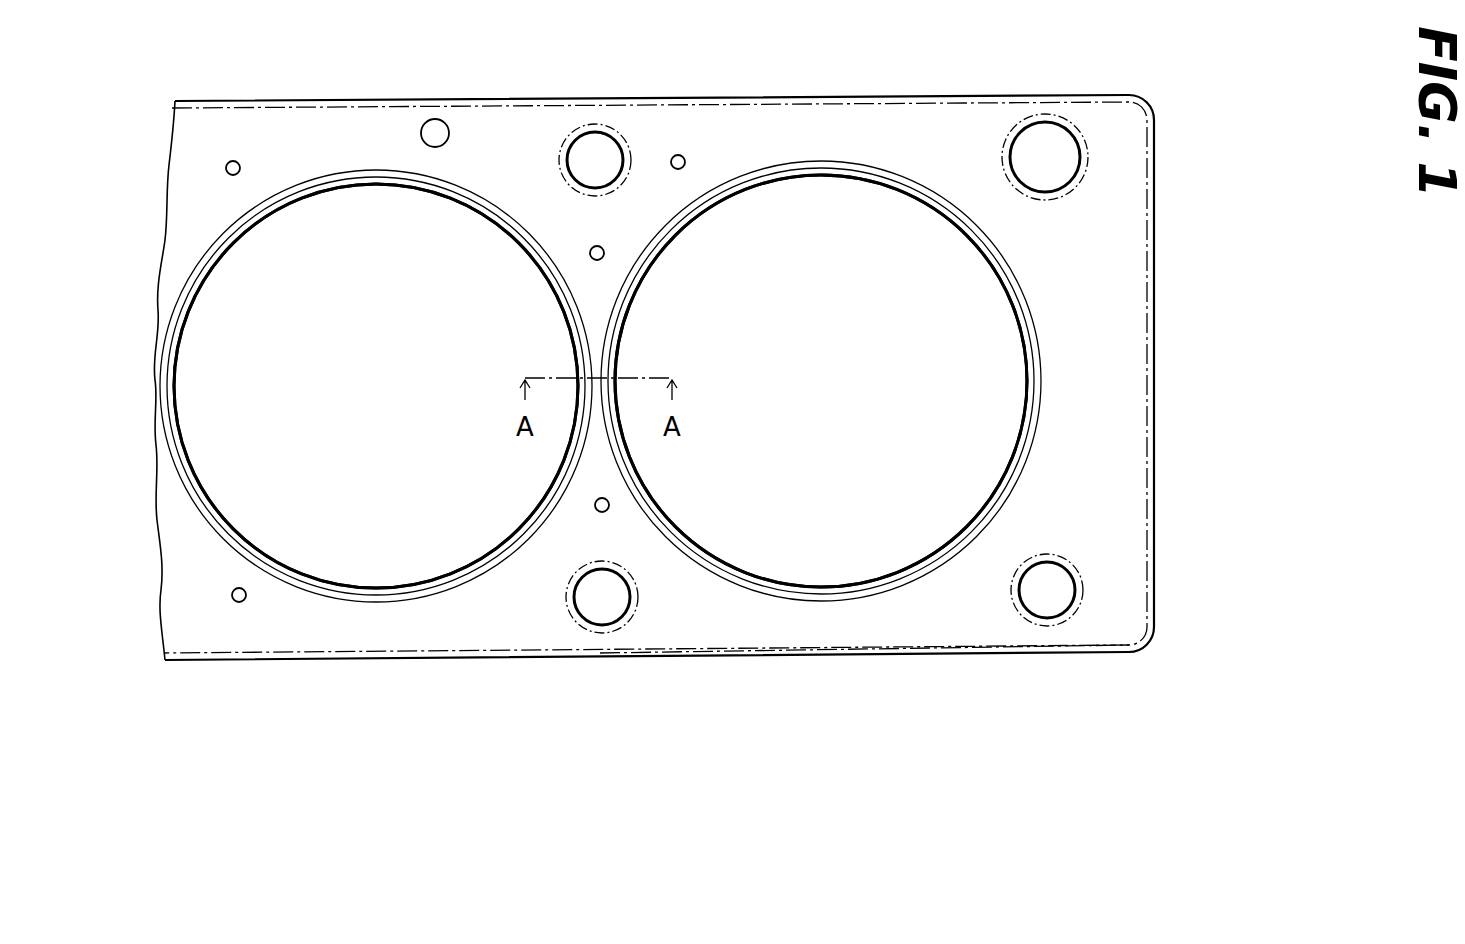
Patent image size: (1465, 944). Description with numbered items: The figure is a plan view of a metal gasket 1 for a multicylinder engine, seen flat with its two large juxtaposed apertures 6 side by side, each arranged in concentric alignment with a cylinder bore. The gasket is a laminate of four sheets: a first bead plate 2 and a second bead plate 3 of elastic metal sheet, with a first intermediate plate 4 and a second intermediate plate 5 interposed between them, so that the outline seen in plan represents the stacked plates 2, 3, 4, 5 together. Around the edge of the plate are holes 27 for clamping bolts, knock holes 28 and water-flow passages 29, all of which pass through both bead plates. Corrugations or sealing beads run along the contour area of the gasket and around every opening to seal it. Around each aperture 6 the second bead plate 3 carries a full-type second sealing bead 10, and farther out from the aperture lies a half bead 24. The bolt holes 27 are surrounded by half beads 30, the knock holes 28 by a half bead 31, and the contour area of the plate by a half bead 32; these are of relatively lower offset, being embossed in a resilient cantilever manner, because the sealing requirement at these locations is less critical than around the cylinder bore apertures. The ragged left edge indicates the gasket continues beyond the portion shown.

The metal gasket 1 is at (896, 92).
The first bead plate 2 is at (724, 377).
The second bead plate 3 is at (724, 377).
The first intermediate plate 4 is at (724, 377).
The second intermediate plate 5 is at (1108, 505).
The juxtaposed apertures 6 is at (359, 371).
The second sealing bead 10 is at (537, 246).
The half bead 24 is at (469, 188).
The holes for clamping bolts 27 is at (602, 142).
The knock holes 28 is at (1032, 140).
The water-flow passages 29 is at (234, 160).
The half bead 30 is at (576, 127).
The half bead 31 is at (1076, 114).
The half bead 32 is at (880, 648).